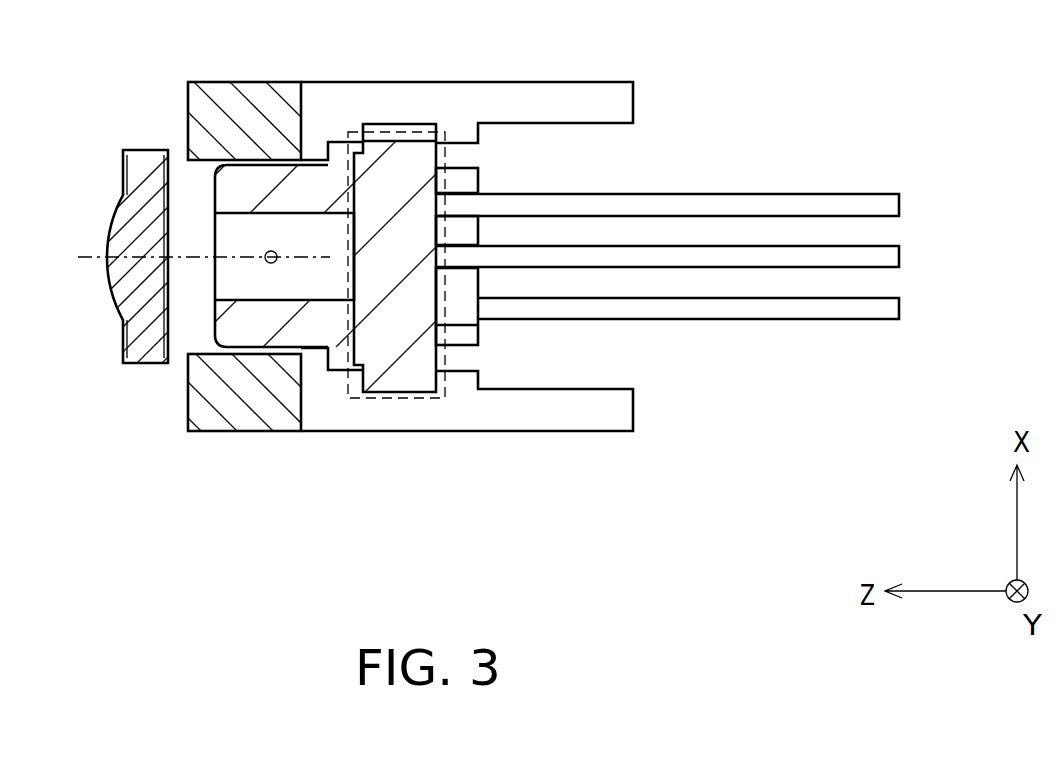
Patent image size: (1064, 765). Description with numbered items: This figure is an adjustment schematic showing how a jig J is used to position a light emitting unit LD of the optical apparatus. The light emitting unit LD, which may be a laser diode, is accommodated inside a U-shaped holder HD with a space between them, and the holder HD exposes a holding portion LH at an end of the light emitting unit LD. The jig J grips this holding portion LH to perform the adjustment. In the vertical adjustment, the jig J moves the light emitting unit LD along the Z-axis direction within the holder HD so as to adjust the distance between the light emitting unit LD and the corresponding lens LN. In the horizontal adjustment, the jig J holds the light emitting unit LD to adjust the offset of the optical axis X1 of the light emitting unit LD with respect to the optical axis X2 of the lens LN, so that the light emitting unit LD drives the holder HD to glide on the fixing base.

The holder HD is at (260, 102).
The light emitting unit LD is at (312, 178).
The holding portion LH is at (397, 132).
The lens LN is at (143, 347).
The jig J is at (557, 112).
The optical axis of the light emitting unit X1 is at (206, 257).
The optical axis of the lens X2 is at (95, 256).